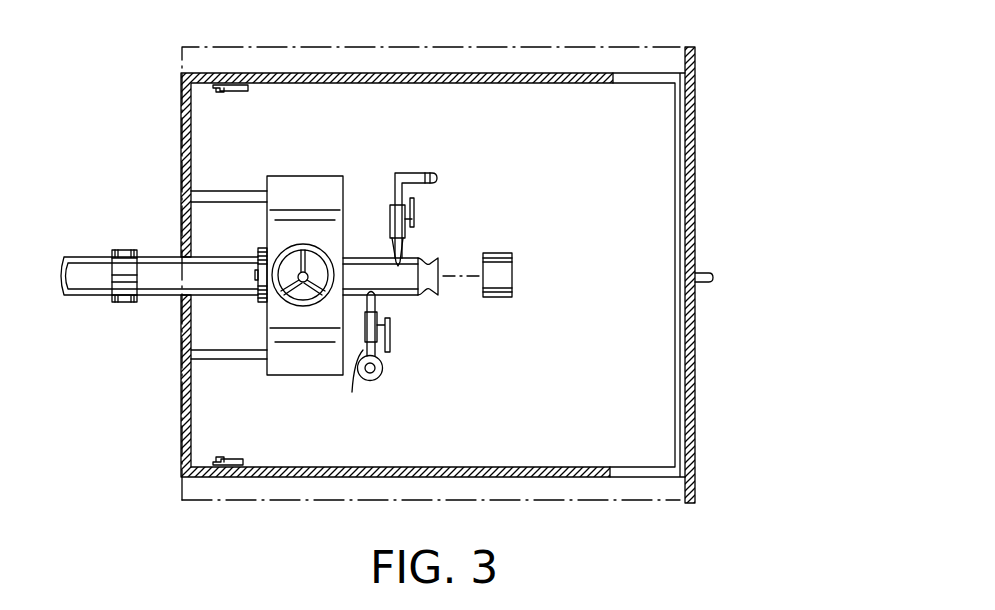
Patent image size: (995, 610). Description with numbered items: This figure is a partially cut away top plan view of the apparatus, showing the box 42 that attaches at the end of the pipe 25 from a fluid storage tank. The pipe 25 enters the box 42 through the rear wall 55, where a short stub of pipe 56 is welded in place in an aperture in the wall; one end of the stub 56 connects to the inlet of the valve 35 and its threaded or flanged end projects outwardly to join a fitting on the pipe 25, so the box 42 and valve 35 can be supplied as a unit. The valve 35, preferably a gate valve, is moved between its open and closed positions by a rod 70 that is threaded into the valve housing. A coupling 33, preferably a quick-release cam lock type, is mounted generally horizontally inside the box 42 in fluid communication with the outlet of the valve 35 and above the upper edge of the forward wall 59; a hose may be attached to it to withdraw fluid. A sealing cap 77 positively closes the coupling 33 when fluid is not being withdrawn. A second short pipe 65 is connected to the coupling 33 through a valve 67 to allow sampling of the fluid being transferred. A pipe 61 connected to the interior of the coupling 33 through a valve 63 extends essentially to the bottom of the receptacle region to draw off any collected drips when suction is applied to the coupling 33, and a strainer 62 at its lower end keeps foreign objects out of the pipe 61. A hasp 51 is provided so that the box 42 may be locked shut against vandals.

The box 42 is at (585, 34).
The rear wall 55 is at (181, 432).
The forward wall 59 is at (697, 356).
The hasp 51 is at (713, 276).
The pipe 25 is at (80, 262).
The short stub of pipe 56 is at (158, 265).
The valve 35 is at (290, 185).
The rod 70 is at (312, 270).
The coupling 33 is at (430, 260).
The sealing cap 77 is at (500, 252).
The second short pipe 65 is at (413, 175).
The valve 67 is at (414, 219).
The valve 63 is at (391, 325).
The strainer 62 is at (384, 368).
The pipe 61 is at (351, 384).